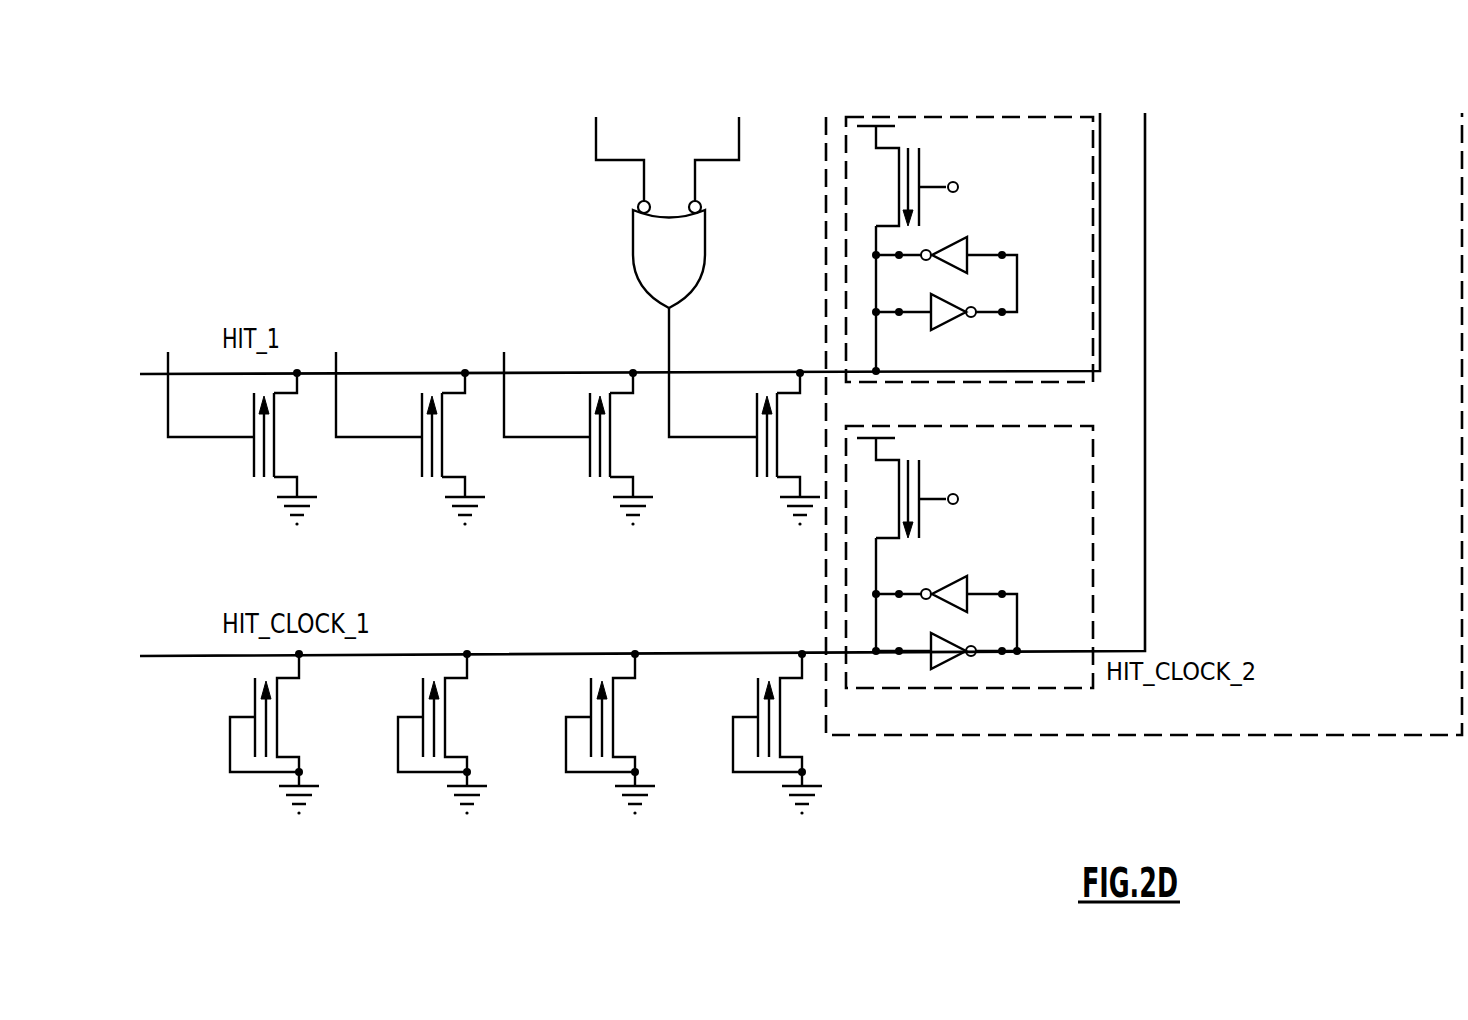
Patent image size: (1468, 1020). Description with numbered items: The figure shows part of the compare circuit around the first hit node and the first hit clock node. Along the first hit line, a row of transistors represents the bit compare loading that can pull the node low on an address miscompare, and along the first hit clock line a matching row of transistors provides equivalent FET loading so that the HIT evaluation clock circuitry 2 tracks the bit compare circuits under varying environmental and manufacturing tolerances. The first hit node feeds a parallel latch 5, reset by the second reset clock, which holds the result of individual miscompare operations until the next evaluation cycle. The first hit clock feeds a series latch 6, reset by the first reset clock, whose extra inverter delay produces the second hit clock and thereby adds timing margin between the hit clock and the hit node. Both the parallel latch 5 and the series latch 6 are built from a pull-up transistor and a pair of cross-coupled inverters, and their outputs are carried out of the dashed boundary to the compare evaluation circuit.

The parallel latch 5 is at (975, 383).
The series latch 6 is at (1003, 688).
The HIT evaluation clock circuitry 2 is at (1144, 424).